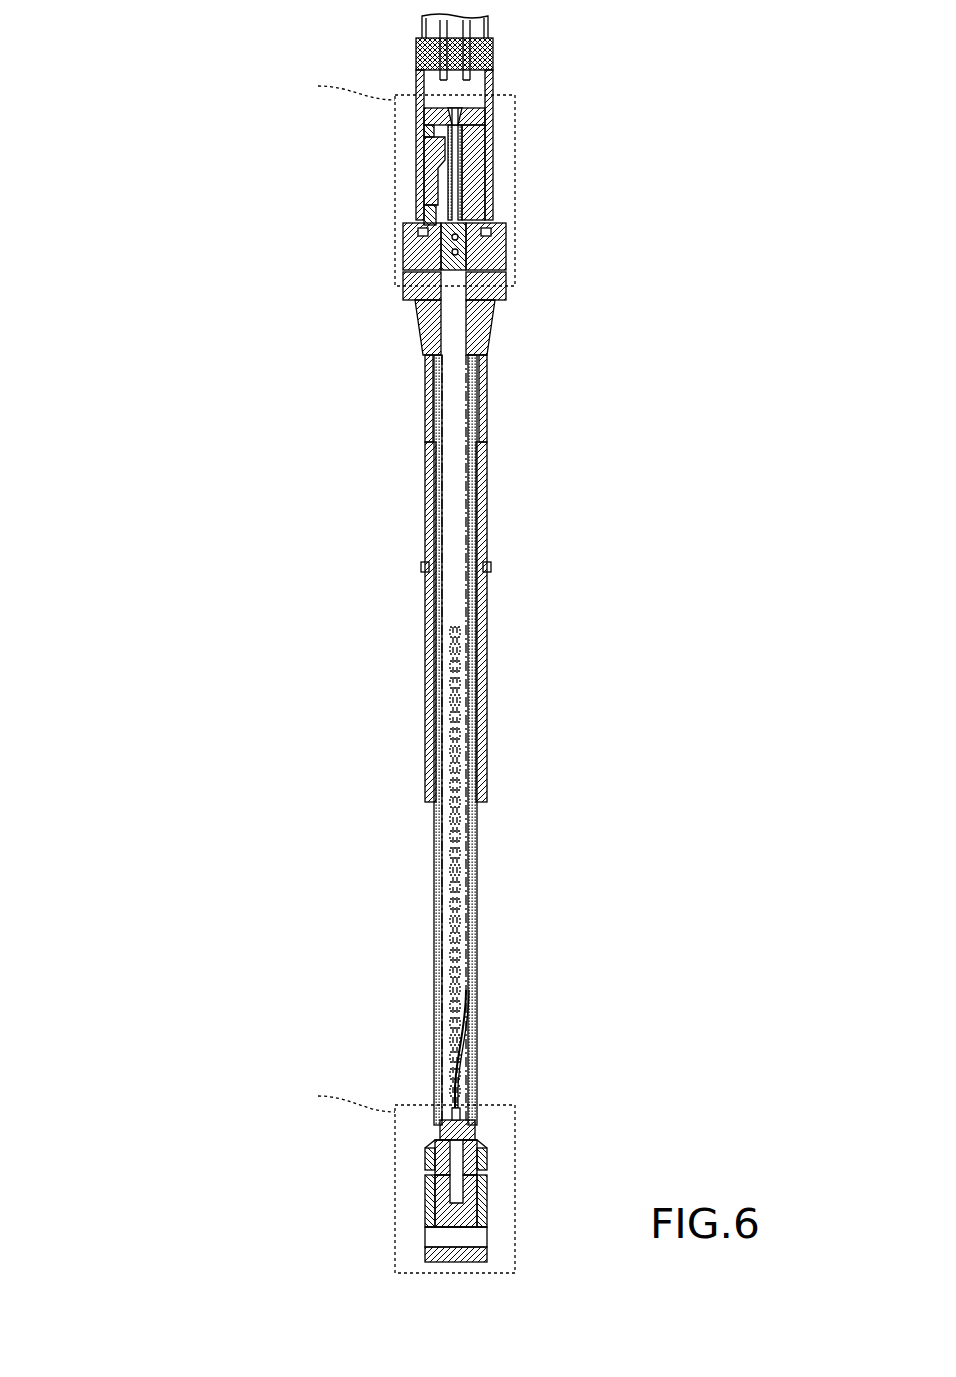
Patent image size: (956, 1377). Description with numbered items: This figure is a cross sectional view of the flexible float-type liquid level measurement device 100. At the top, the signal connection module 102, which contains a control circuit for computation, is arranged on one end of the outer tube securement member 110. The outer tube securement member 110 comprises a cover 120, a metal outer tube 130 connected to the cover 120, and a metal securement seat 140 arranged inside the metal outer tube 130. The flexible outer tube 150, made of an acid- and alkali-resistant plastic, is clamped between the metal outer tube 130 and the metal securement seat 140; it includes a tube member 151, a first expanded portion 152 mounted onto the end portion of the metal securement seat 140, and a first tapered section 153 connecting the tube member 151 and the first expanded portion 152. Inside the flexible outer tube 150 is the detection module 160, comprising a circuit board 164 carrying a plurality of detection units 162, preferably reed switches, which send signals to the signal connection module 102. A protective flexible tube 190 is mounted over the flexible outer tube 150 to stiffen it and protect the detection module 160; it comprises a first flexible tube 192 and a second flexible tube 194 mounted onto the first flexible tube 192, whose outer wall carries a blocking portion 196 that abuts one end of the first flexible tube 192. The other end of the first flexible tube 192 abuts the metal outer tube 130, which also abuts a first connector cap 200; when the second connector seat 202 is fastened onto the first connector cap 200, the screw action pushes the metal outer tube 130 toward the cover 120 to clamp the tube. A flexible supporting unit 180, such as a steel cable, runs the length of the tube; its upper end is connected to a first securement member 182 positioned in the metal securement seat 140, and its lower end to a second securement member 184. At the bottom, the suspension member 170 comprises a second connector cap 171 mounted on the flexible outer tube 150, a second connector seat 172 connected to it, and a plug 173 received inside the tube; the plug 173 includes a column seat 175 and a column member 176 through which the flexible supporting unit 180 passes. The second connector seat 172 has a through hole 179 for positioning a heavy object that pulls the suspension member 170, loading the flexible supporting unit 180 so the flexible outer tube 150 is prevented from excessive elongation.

The flexible float-type liquid level measurement device 100 is at (322, 38).
The signal connection module 102 is at (490, 24).
The outer tube securement member 110 is at (585, 107).
The cover 120 is at (487, 110).
The metal outer tube 130 is at (490, 165).
The metal securement seat 140 is at (464, 140).
The flexible outer tube 150 is at (330, 128).
The tube member 151 is at (425, 215).
The first expanded portion 152 is at (428, 128).
The first tapered section 153 is at (423, 155).
The detection module 160 is at (350, 843).
The detection unit 162 is at (440, 840).
The circuit board 164 is at (440, 892).
The suspension member 170 is at (585, 1133).
The second connector cap 171 is at (488, 1142).
The second connector seat 172 is at (489, 1195).
The plug 173 is at (352, 1148).
The column seat 175 is at (432, 1190).
The column member 176 is at (432, 1147).
The through hole 179 is at (478, 1246).
The flexible supporting unit 180 is at (472, 992).
The first securement member 182 is at (457, 118).
The second securement member 184 is at (478, 1136).
The protective flexible tube 190 is at (330, 405).
The first flexible tube 192 is at (428, 398).
The second flexible tube 194 is at (428, 455).
The blocking portion 196 is at (493, 567).
The first connector cap 200 is at (508, 245).
The second connector seat 202 is at (508, 290).